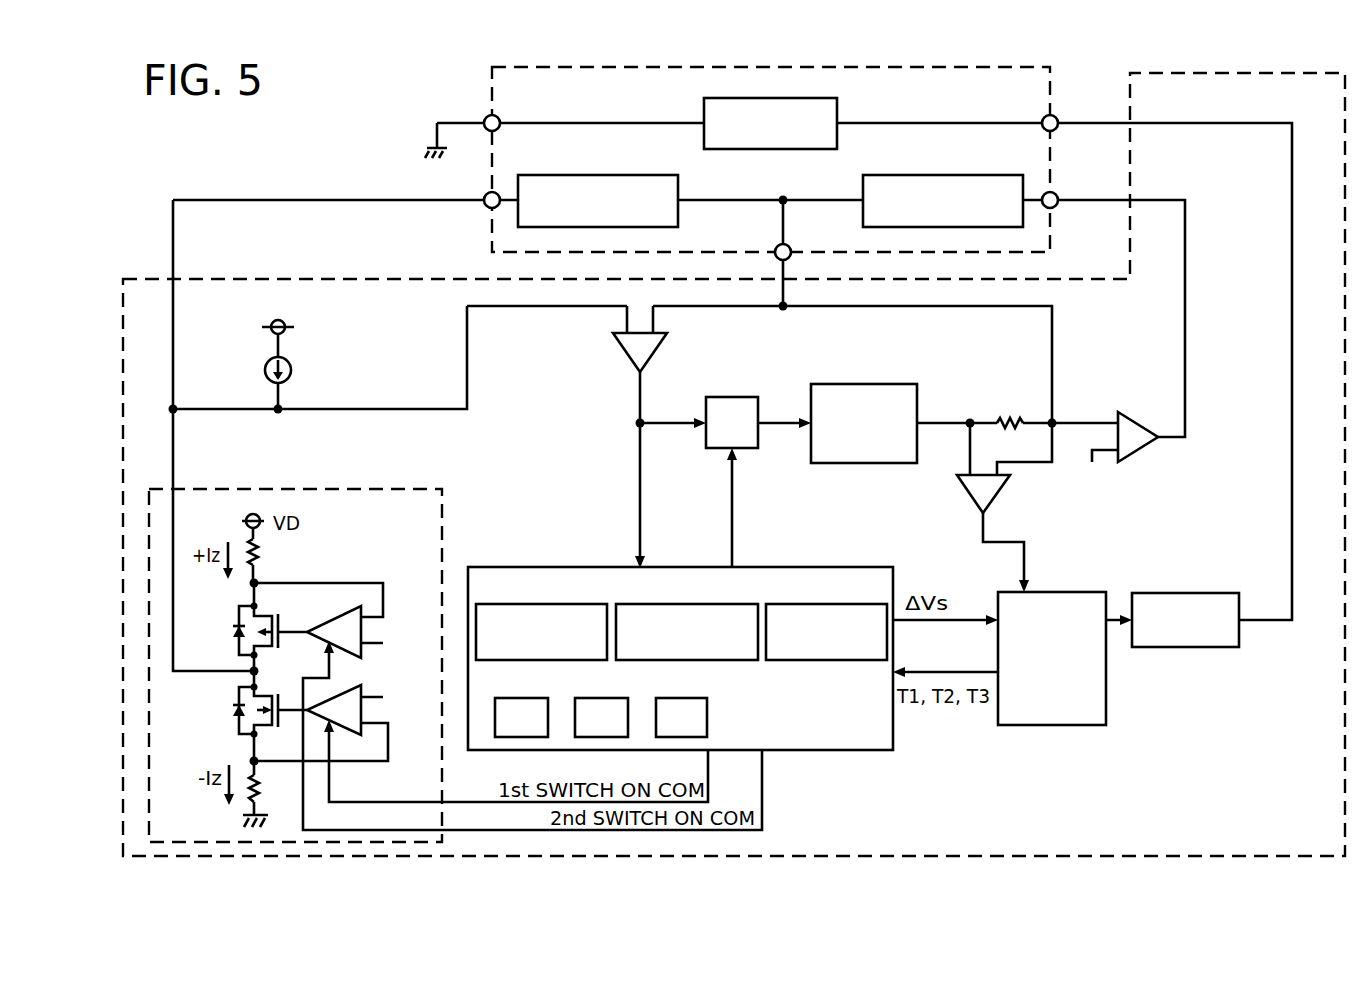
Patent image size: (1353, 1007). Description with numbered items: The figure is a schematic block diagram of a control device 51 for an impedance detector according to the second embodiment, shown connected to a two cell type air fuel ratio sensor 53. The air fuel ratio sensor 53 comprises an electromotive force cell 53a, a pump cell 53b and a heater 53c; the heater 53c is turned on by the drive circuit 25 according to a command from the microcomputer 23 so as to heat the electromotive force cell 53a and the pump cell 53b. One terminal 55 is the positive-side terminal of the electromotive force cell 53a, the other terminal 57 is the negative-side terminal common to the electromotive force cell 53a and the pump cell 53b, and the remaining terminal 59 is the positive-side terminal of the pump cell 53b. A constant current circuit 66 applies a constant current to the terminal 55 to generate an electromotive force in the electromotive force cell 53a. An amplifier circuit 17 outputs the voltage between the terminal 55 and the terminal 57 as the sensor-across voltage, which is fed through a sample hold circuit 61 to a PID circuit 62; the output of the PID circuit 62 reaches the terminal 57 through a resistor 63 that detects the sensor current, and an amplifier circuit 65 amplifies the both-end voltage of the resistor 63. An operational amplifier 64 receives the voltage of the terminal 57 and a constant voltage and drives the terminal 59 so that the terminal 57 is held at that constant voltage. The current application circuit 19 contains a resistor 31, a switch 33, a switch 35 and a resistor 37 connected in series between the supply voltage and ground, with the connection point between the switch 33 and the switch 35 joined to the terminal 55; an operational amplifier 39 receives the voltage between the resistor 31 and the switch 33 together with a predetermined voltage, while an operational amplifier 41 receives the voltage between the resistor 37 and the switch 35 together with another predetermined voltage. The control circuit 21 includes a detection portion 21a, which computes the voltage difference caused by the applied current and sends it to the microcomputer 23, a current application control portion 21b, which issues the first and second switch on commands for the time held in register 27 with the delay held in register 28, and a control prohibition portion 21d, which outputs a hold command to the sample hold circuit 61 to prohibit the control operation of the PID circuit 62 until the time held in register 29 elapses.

The amplifier circuit 17 is at (620, 346).
The current application circuit 19 is at (417, 488).
The control circuit 21 is at (680, 681).
The detection portion 21a is at (825, 604).
The current application control portion 21b is at (553, 604).
The control prohibition portion 21d is at (703, 604).
The microcomputer 23 is at (1050, 592).
The drive circuit 25 is at (1185, 593).
The register 27 is at (522, 698).
The register 28 is at (601, 698).
The register 29 is at (681, 698).
The resistor 31 is at (259, 556).
The switch 33 is at (233, 630).
The switch 35 is at (238, 703).
The resistor 37 is at (259, 790).
The operational amplifier 39 is at (370, 629).
The operational amplifier 41 is at (370, 732).
The control device 51 is at (352, 278).
The air fuel ratio sensor 53 is at (1052, 159).
The electromotive force cell 53a is at (660, 161).
The pump cell 53b is at (975, 175).
The heater 53c is at (777, 98).
The terminal 55 is at (487, 208).
The terminal 57 is at (776, 250).
The terminal 59 is at (1057, 206).
The sample hold circuit 61 is at (733, 397).
The PID circuit 62 is at (838, 384).
The resistor 63 is at (1011, 419).
The operational amplifier 64 is at (1130, 415).
The amplifier circuit 65 is at (969, 491).
The constant current circuit 66 is at (292, 371).